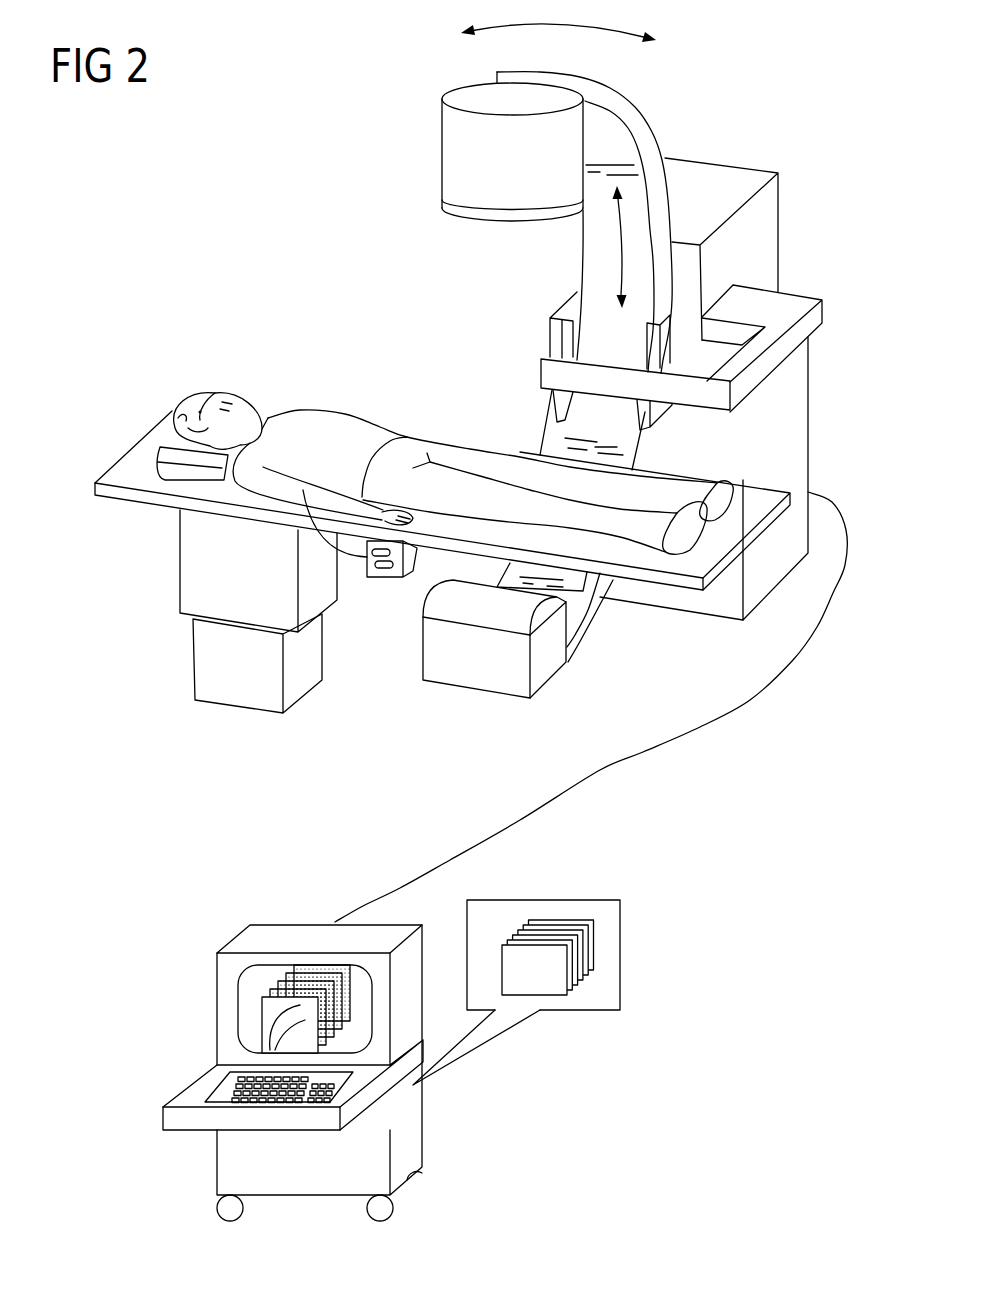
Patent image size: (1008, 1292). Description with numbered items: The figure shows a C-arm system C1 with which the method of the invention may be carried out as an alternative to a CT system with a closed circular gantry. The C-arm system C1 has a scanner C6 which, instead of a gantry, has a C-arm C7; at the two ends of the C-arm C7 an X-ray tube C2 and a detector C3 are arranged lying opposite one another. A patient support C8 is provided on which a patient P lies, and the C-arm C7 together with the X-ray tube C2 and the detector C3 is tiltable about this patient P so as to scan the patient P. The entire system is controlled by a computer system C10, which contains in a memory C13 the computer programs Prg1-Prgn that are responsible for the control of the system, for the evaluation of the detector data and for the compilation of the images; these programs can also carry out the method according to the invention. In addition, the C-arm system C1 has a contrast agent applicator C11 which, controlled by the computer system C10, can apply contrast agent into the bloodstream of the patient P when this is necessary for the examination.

The C-arm system C1 is at (216, 333).
The X-ray tube C2 is at (445, 147).
The detector C3 is at (547, 668).
The scanner C6 is at (768, 207).
The C-arm C7 is at (642, 134).
The patient support C8 is at (115, 497).
The computer system C10 is at (413, 1135).
The contrast agent applicator C11 is at (382, 579).
The memory C13 is at (622, 919).
The patient P is at (345, 438).
The computer programs Prg1-Prgn is at (552, 996).